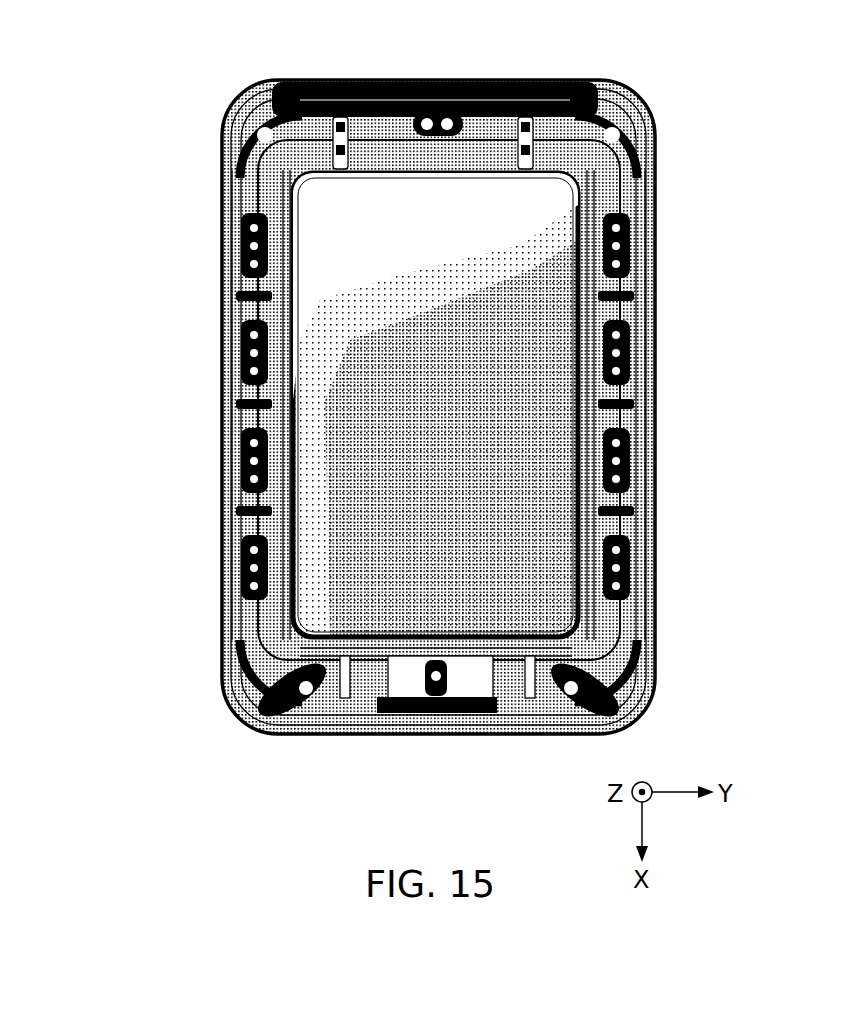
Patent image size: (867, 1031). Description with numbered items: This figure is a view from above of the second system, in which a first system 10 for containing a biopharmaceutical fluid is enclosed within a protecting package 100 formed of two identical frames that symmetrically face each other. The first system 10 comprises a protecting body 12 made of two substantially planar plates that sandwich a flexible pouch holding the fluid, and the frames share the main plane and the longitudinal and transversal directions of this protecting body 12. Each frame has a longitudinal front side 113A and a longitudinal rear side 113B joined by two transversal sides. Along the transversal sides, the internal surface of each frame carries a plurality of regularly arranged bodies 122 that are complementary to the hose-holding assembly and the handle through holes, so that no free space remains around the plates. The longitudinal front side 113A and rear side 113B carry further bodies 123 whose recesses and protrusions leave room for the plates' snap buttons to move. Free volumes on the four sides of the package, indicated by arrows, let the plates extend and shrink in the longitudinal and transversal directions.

The protective case assembly 100 is at (152, 272).
The first system 10 is at (522, 473).
The protecting body 12 is at (525, 386).
The bodies 122 is at (223, 235).
The bodies 123 is at (228, 110).
The longitudinal front side 113A is at (500, 735).
The longitudinal rear side 113B is at (426, 100).